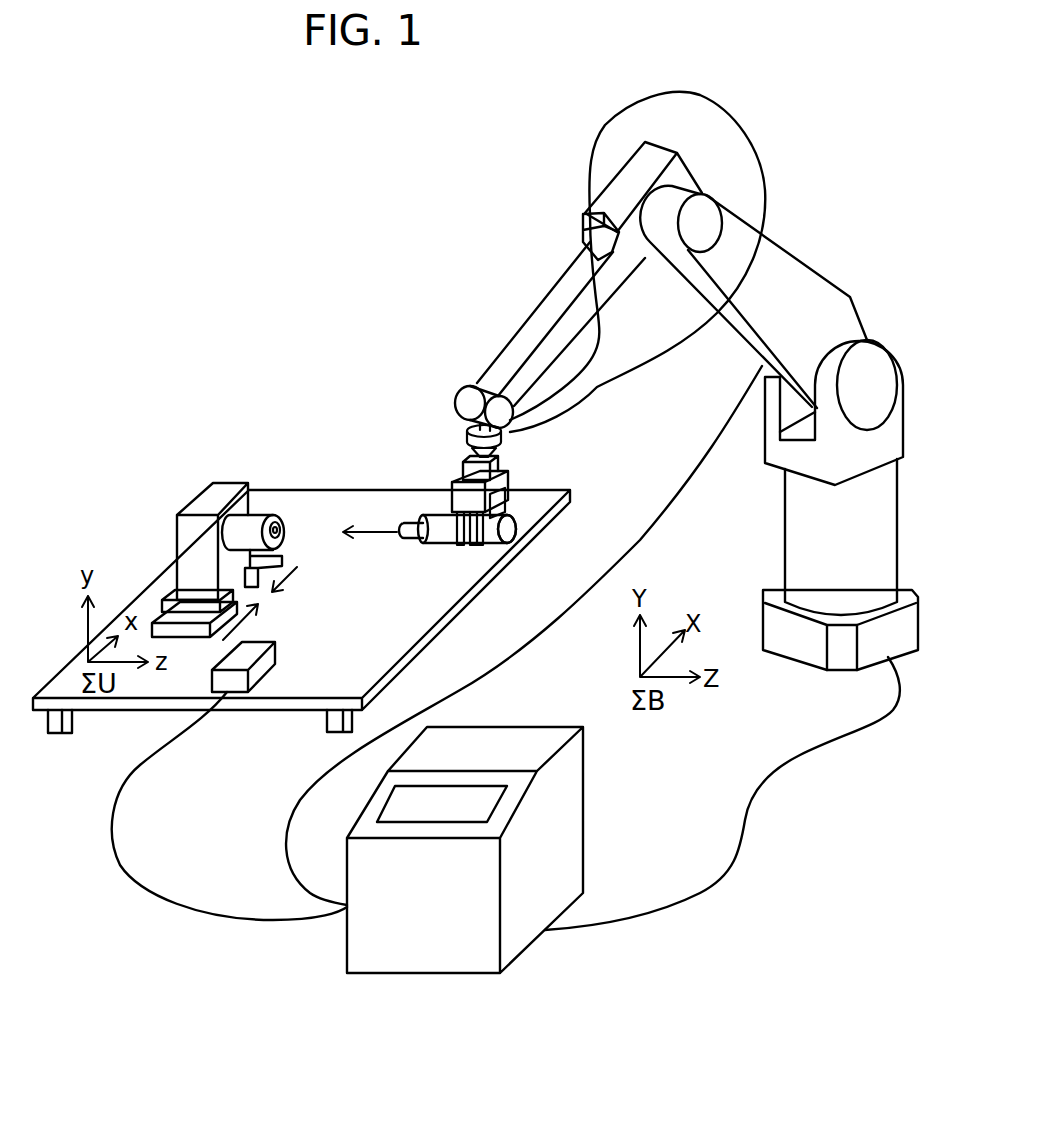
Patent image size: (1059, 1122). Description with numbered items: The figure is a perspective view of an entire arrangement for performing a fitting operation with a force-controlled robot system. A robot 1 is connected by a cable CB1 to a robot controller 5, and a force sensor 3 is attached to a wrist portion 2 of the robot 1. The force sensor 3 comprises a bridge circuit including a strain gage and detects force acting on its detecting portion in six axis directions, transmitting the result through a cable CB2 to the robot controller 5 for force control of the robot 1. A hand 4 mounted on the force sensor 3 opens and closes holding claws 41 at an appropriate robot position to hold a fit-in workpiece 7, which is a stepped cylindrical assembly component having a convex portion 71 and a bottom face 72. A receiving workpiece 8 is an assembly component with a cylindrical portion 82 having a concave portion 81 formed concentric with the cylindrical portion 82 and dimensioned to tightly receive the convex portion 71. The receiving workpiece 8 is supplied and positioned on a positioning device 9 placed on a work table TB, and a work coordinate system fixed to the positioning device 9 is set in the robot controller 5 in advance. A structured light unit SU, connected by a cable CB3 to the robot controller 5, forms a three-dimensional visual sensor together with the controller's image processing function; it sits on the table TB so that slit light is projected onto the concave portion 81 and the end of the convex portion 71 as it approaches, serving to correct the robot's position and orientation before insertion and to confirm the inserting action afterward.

The robot 1 is at (805, 250).
The wrist portion 2 is at (458, 381).
The force sensor 3 is at (465, 437).
The hand 4 is at (460, 500).
The holding claws 41 is at (503, 503).
The robot controller 5 is at (541, 947).
The fit-in workpiece 7 is at (433, 545).
The convex portion 71 is at (412, 538).
The bottom face 72 is at (508, 523).
The receiving workpiece 8 is at (222, 492).
The concave portion 81 is at (278, 530).
The cylindrical portion 82 is at (257, 517).
The positioning device 9 is at (158, 613).
The work table TB is at (173, 565).
The structured light unit SU is at (268, 642).
The cable CB1 is at (752, 803).
The cable CB2 is at (597, 387).
The cable CB3 is at (155, 900).